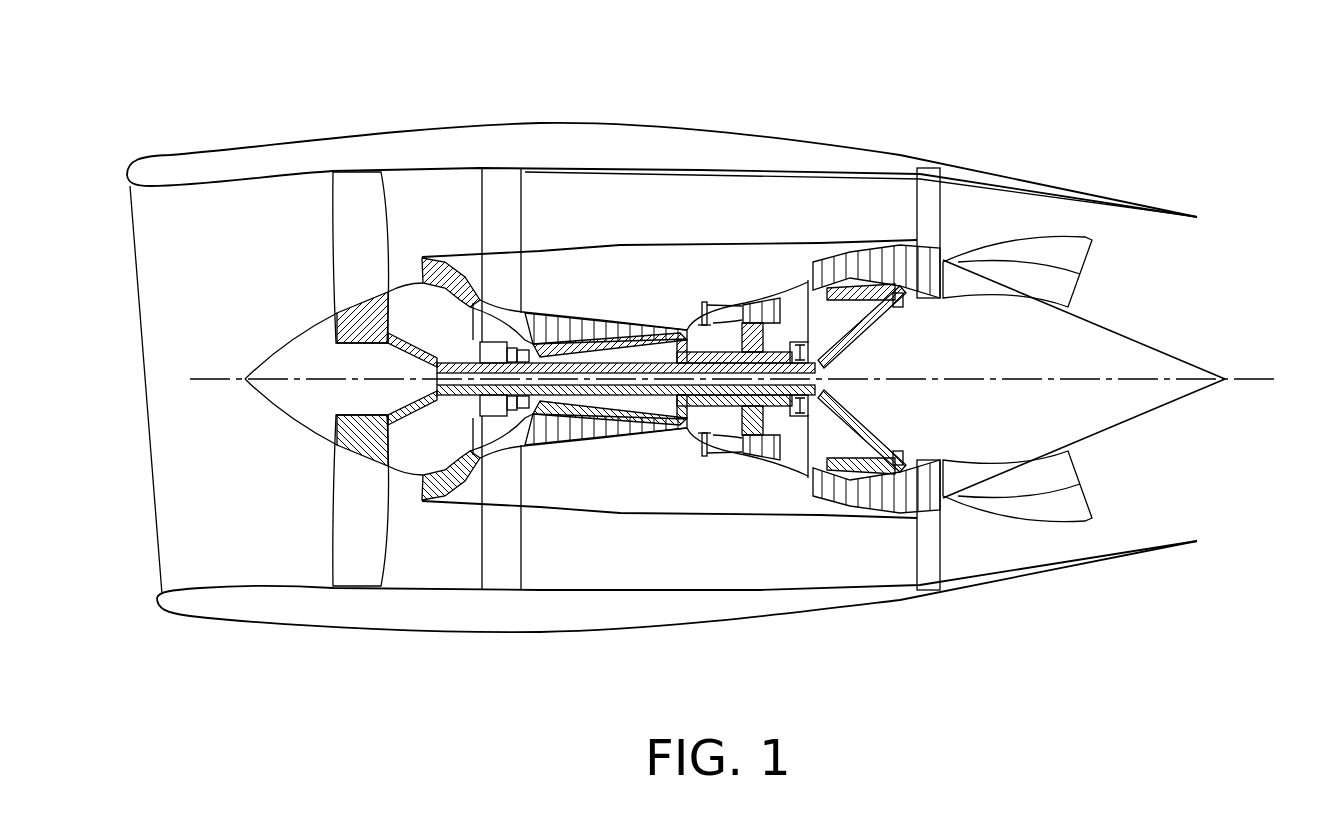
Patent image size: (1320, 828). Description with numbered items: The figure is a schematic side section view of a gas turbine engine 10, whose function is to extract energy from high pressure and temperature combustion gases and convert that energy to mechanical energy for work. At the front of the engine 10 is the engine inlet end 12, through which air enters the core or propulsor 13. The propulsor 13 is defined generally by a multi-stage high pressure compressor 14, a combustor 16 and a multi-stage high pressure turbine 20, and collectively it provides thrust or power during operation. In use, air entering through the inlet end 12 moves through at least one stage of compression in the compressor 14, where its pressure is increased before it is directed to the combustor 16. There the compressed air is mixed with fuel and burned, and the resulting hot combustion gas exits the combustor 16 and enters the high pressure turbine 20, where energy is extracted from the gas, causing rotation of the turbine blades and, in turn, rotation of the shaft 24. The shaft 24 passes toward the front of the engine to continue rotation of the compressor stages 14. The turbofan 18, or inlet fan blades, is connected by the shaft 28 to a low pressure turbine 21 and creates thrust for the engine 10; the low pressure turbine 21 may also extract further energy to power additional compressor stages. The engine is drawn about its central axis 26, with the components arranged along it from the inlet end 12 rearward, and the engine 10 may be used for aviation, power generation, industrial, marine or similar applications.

The gas turbine engine 10 is at (957, 100).
The engine inlet end 12 is at (138, 214).
The propulsor 13 is at (662, 228).
The multi-stage high pressure compressor 14 is at (565, 304).
The combustor 16 is at (725, 298).
The turbofan 18 is at (298, 234).
The multi-stage high pressure turbine 20 is at (775, 288).
The low pressure turbine 21 is at (896, 313).
The shaft 24 is at (700, 427).
The engine centerline axis 26 is at (1282, 379).
The shaft 28 is at (613, 392).